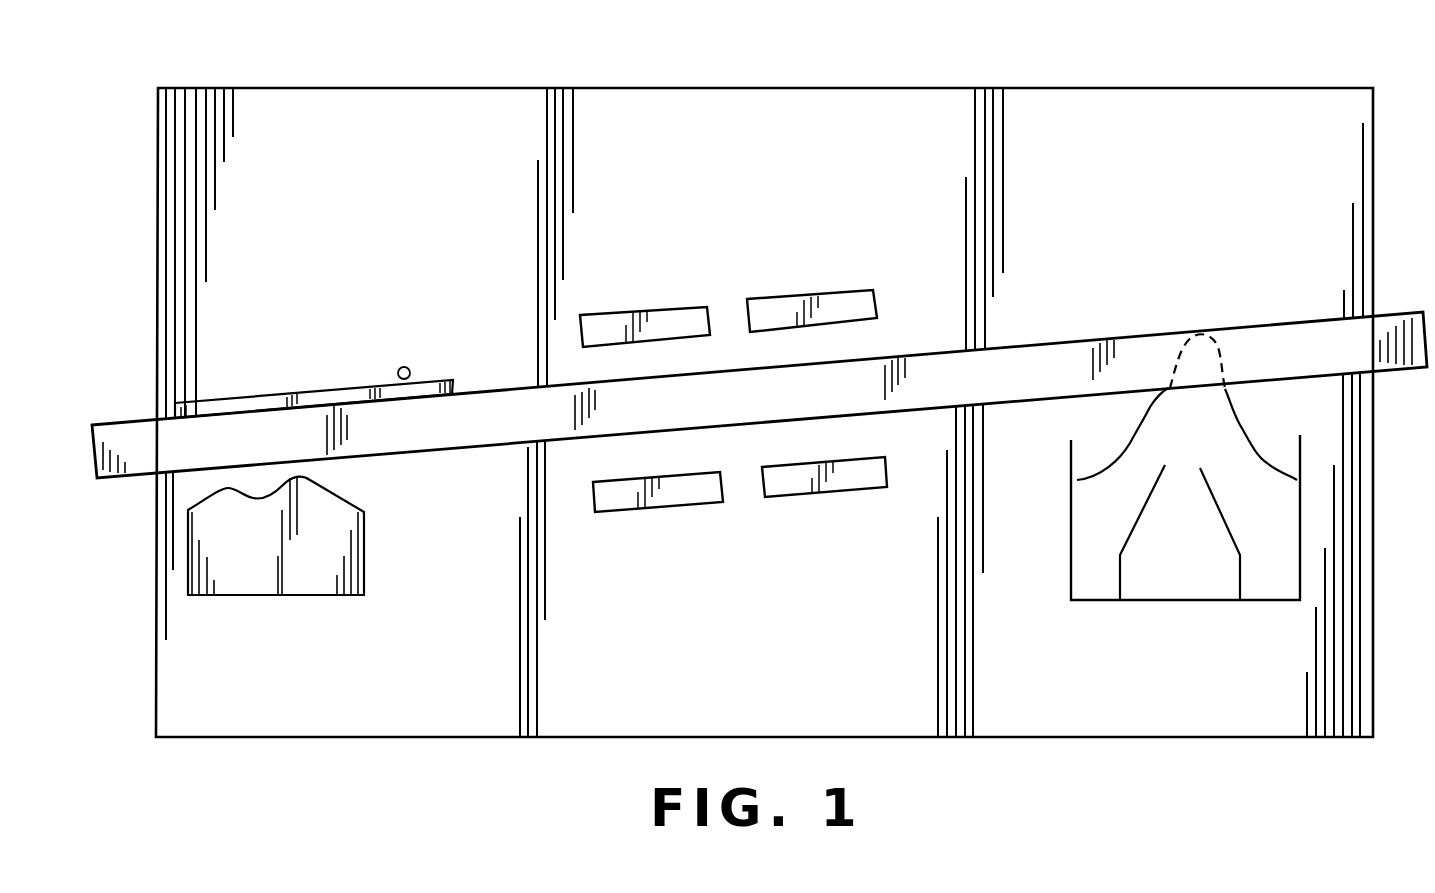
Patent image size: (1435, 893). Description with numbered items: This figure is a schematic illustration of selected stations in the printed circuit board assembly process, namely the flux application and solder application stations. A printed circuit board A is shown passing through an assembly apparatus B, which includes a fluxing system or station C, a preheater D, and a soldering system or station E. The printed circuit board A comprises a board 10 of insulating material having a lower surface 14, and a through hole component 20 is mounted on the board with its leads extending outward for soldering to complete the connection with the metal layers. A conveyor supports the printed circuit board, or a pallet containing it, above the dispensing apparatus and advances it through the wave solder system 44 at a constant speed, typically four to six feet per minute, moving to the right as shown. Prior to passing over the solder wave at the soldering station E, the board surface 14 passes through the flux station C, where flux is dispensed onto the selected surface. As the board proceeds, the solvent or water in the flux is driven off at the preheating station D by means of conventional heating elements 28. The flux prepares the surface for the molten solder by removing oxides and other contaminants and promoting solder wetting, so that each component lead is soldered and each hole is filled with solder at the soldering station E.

The board 10 is at (454, 380).
The lower surface 14 is at (233, 410).
The through hole component 20 is at (406, 367).
The heating elements 28 is at (635, 313).
The wave solder system 44 is at (1196, 332).
The printed circuit board A is at (314, 348).
The assembly apparatus B is at (846, 80).
The fluxing station C is at (294, 616).
The preheater D is at (747, 411).
The soldering station E is at (1185, 459).